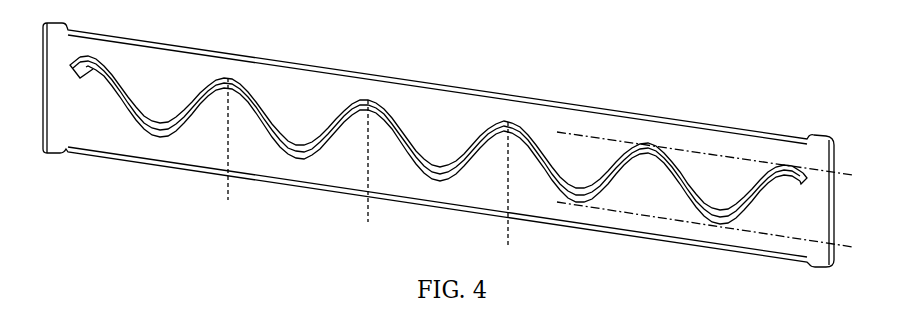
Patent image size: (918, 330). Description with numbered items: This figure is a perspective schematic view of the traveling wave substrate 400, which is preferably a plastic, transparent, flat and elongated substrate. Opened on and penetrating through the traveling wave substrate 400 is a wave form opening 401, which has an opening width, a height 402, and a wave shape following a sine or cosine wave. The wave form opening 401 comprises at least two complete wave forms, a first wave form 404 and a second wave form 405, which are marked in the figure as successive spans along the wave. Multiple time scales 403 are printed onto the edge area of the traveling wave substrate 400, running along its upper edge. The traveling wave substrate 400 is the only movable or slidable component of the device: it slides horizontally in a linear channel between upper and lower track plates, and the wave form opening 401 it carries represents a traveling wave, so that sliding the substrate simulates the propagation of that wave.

The traveling wave substrate 400 is at (121, 207).
The wave form opening 401 is at (92, 68).
The height 402 is at (843, 176).
The time scales 403 is at (89, 29).
The first wave form 404 is at (369, 208).
The second wave form 405 is at (229, 187).